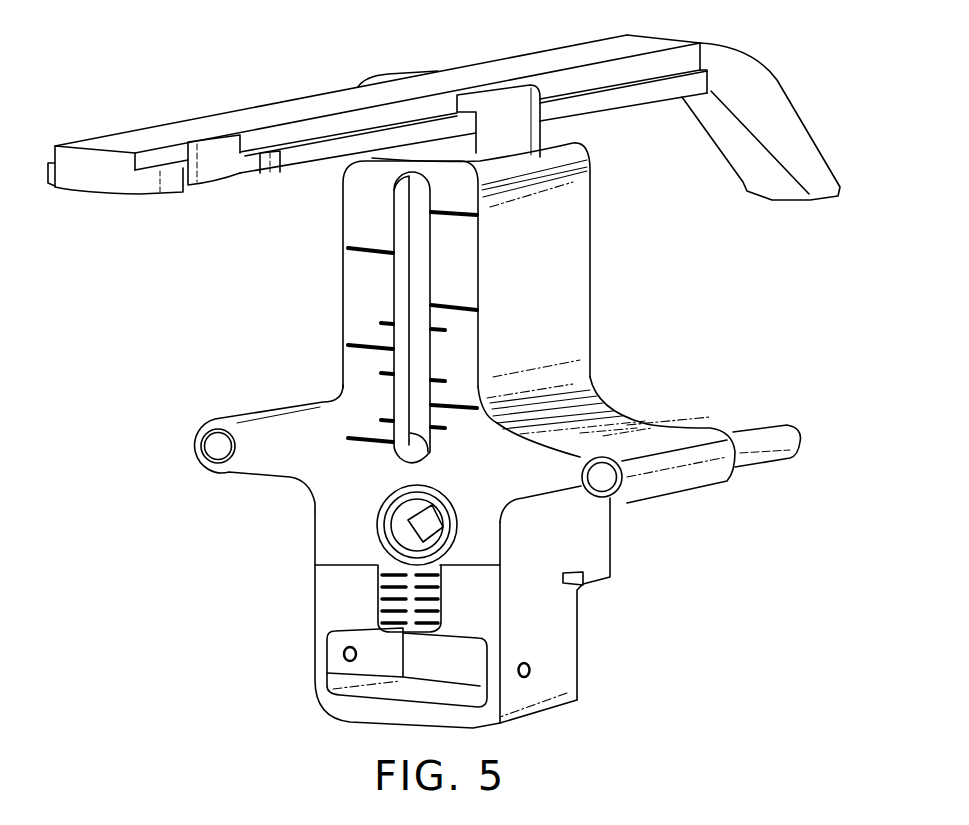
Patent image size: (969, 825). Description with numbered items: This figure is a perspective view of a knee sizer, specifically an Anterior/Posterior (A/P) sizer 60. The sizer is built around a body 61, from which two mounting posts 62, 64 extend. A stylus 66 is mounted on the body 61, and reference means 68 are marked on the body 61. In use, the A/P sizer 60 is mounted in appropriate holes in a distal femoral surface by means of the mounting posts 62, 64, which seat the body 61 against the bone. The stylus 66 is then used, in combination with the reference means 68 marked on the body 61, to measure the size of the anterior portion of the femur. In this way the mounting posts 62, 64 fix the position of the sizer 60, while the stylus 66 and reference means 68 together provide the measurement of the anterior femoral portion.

The Anterior/Posterior (A/P) sizer 60 is at (498, 406).
The body 61 is at (583, 280).
The mounting post 62 is at (758, 438).
The mounting post 64 is at (328, 361).
The stylus 66 is at (778, 95).
The reference means 68 is at (378, 422).